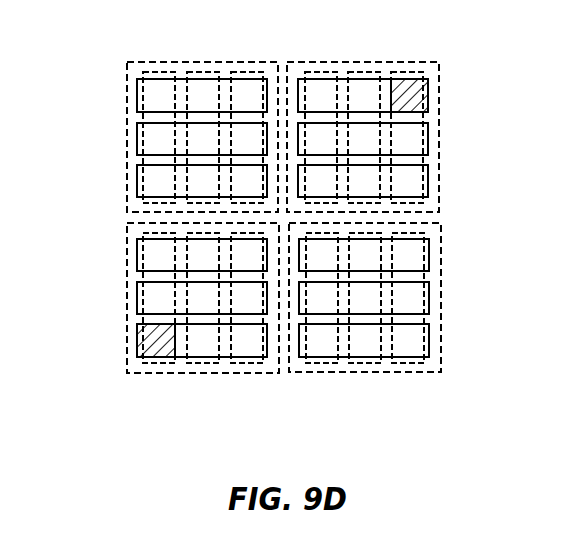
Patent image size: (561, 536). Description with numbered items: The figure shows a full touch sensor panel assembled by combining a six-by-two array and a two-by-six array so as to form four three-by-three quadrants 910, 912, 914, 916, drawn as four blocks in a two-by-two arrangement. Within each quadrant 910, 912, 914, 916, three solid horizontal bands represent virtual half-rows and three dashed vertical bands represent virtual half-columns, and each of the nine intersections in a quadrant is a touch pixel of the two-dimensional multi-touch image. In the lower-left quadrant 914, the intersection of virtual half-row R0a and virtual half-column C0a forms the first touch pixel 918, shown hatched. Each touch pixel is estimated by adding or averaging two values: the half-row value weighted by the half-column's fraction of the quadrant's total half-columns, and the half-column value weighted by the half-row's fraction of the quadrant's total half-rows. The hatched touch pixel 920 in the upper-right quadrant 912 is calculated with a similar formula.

The 3×3 quadrant 910 is at (168, 62).
The 3×3 quadrant 912 is at (394, 62).
The 3×3 quadrant 914 is at (188, 331).
The 3×3 quadrant 916 is at (398, 373).
The touch pixel[0][0] 918 is at (148, 342).
The pixel[6][6] 920 is at (412, 94).
The virtual half-row R0a is at (137, 333).
The virtual half-column C0a is at (155, 363).